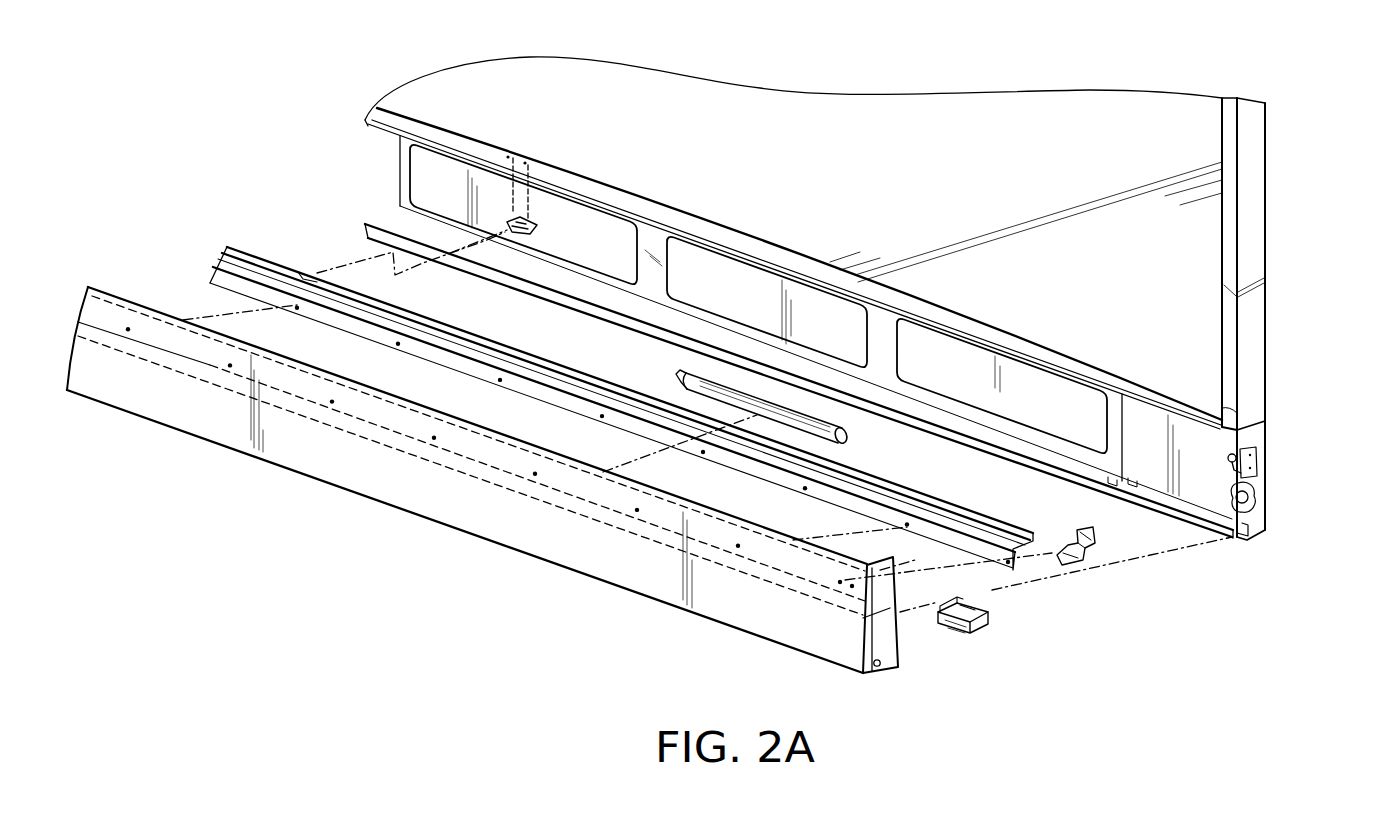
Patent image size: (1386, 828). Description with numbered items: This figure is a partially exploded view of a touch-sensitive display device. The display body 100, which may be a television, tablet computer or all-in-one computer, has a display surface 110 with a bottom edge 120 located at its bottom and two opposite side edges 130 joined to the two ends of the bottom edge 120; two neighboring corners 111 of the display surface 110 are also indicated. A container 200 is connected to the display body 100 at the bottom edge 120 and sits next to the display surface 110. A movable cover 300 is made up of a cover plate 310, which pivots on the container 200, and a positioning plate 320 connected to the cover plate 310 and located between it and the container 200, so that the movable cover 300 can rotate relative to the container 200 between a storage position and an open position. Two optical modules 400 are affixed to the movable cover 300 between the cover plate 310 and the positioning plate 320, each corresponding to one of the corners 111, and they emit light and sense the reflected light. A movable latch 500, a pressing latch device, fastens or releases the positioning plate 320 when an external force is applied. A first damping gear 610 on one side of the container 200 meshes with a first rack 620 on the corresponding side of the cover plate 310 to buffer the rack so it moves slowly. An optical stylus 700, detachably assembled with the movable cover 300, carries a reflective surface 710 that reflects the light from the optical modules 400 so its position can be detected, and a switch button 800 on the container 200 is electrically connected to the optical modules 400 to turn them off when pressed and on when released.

The display body 100 is at (872, 282).
The display surface 110 is at (1052, 178).
The corners 111 is at (1268, 421).
The bottom edge 120 is at (757, 265).
The side edges 130 is at (1253, 153).
The container 200 is at (1287, 499).
The movable cover 300 is at (550, 460).
The cover plate 310 is at (481, 503).
The positioning plate 320 is at (527, 388).
The optical modules 400 is at (1085, 527).
The movable latch 500 is at (530, 224).
The first damping gear 610 is at (1257, 498).
The first rack 620 is at (960, 600).
The optical stylus 700 is at (752, 393).
The reflective surface 710 is at (680, 370).
The switch button 800 is at (1262, 460).